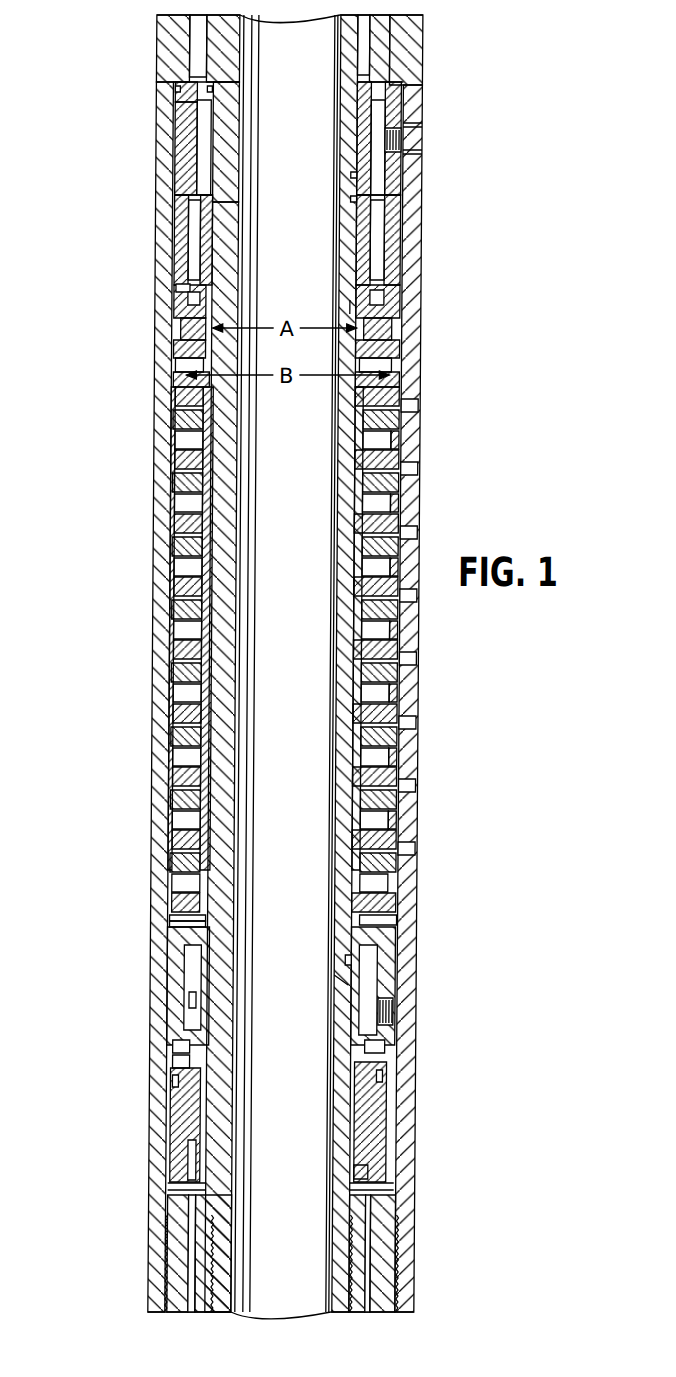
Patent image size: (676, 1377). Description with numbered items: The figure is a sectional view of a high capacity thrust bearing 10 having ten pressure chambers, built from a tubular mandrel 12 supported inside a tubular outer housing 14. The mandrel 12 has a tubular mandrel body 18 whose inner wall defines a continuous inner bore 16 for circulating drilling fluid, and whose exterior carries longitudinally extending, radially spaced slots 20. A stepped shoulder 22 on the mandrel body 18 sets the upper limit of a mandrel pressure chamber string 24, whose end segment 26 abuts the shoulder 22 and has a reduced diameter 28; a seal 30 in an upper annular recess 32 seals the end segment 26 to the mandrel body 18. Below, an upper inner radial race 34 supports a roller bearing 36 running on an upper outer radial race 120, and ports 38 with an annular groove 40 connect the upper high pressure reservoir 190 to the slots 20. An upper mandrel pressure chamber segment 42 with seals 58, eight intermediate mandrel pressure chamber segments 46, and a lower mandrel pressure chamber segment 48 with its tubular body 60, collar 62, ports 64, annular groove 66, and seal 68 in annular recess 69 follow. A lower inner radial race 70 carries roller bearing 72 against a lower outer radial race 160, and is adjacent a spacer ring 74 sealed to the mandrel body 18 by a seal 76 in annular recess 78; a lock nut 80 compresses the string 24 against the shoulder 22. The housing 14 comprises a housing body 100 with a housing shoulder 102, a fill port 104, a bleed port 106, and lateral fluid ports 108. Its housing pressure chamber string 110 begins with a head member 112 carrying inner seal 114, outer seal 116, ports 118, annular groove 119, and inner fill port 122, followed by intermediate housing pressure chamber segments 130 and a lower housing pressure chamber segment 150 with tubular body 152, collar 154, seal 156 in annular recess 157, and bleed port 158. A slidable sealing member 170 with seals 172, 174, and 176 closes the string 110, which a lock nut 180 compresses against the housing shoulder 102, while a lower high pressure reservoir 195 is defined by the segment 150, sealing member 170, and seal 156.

The thrust bearing 10 is at (483, 46).
The tubular mandrel 12 is at (225, 157).
The tubular outer housing 14 is at (172, 50).
The inner bore 16 is at (304, 523).
The tubular mandrel body 18 is at (200, 26).
The radially spaced slots 20 is at (354, 306).
The shoulder 22 is at (213, 33).
The mandrel pressure chamber string 24 is at (222, 120).
The end segment 26 is at (213, 67).
The reduced diameter 28 is at (185, 86).
The seal 30 is at (355, 175).
The upper annular recess 32 is at (355, 199).
The upper inner radial race 34 is at (186, 233).
The roller bearing 36 is at (382, 223).
The ports 38 is at (398, 297).
The annular groove 40 is at (187, 290).
The upper mandrel pressure chamber segment 42 is at (187, 354).
The intermediate mandrel pressure chamber segments 46 is at (189, 412).
The lower mandrel pressure chamber segment 48 is at (191, 893).
The seals 58 is at (190, 330).
The tubular body 60 is at (201, 988).
The collar 62 is at (195, 922).
The ports 64 is at (357, 964).
The annular groove 66 is at (354, 987).
The seal 68 is at (196, 920).
The annular recess 69 is at (184, 906).
The lower inner radial race 70 is at (198, 1047).
The roller bearing 72 is at (202, 1068).
The spacer ring 74 is at (200, 1185).
The seal 76 is at (218, 1192).
The annular recess 78 is at (193, 1193).
The lock nut 80 is at (207, 1262).
The housing body 100 is at (178, 213).
The housing shoulder 102 is at (405, 80).
The fill port 104 is at (413, 149).
The bleed port 106 is at (404, 1009).
The lateral fluid ports 108 is at (412, 355).
The housing pressure chamber string 110 is at (165, 306).
The head member 112 is at (183, 179).
The inner seal 114 is at (370, 97).
The outer seal 116 is at (403, 97).
The ports 118 is at (407, 335).
The annular groove 119 is at (400, 349).
The upper outer radial race 120 is at (196, 259).
The inner fill port 122 is at (410, 137).
The intermediate housing pressure chamber segments 130 is at (400, 368).
The lower housing pressure chamber segment 150 is at (398, 978).
The tubular body 152 is at (400, 1046).
The collar 154 is at (398, 917).
The seal 156 is at (400, 943).
The annular recess 157 is at (192, 942).
The bleed port 158 is at (400, 1025).
The lower outer radial race 160 is at (201, 1095).
The sealing member 170 is at (400, 1203).
The seal 172 is at (373, 1183).
The seal 174 is at (400, 1178).
The seal 176 is at (400, 1150).
The lock nut 180 is at (400, 1280).
The high pressure reservoir 190 is at (205, 132).
The high pressure reservoir 195 is at (207, 1003).